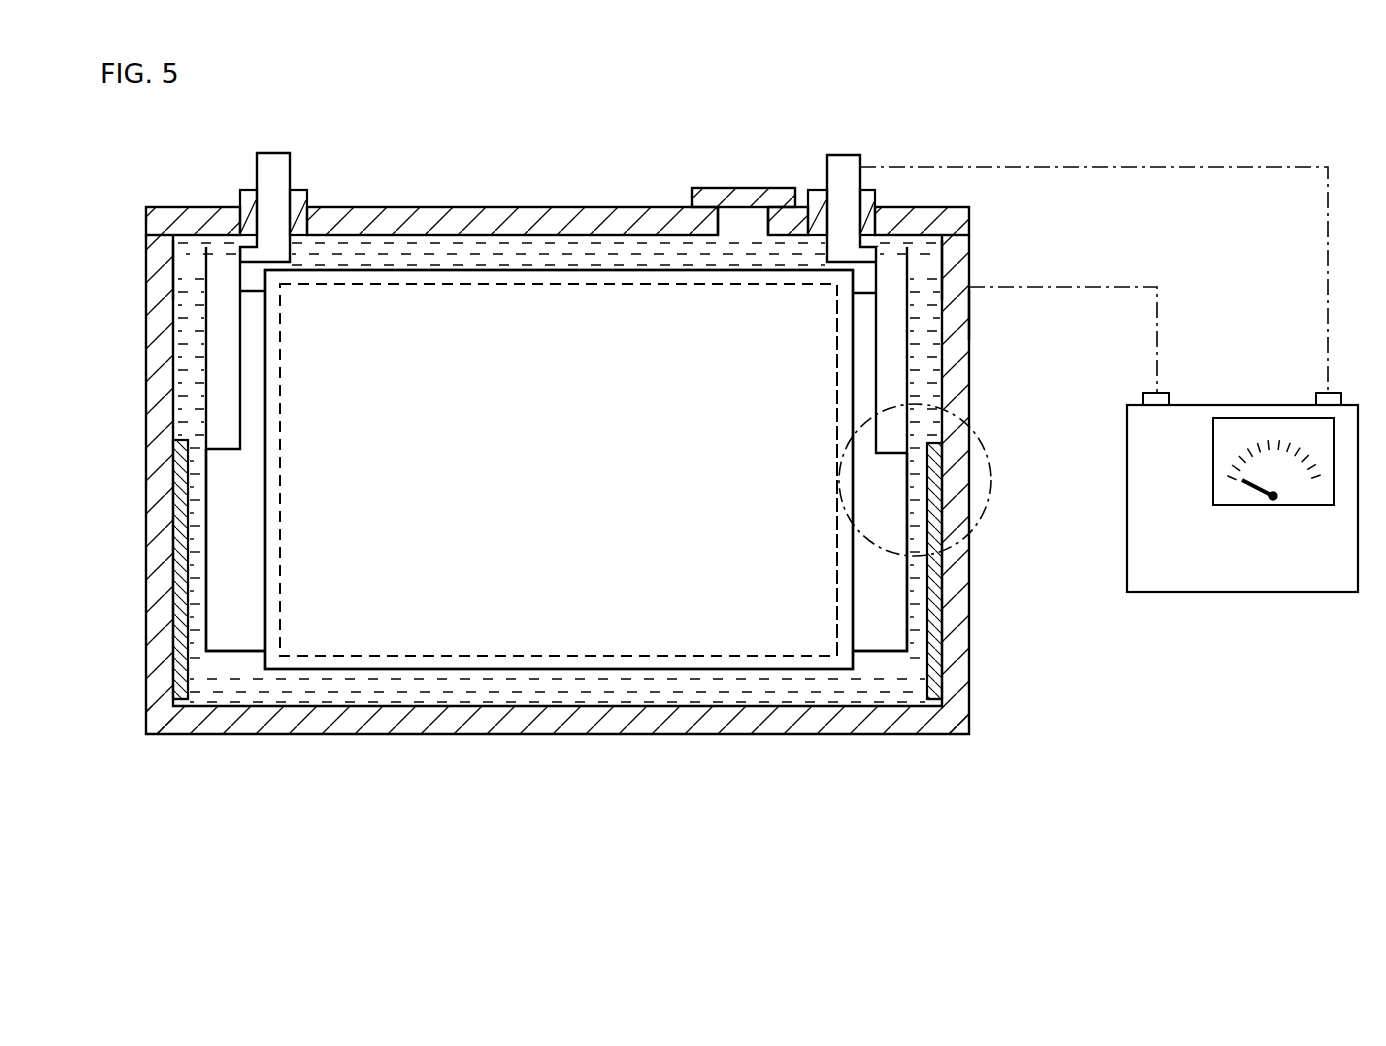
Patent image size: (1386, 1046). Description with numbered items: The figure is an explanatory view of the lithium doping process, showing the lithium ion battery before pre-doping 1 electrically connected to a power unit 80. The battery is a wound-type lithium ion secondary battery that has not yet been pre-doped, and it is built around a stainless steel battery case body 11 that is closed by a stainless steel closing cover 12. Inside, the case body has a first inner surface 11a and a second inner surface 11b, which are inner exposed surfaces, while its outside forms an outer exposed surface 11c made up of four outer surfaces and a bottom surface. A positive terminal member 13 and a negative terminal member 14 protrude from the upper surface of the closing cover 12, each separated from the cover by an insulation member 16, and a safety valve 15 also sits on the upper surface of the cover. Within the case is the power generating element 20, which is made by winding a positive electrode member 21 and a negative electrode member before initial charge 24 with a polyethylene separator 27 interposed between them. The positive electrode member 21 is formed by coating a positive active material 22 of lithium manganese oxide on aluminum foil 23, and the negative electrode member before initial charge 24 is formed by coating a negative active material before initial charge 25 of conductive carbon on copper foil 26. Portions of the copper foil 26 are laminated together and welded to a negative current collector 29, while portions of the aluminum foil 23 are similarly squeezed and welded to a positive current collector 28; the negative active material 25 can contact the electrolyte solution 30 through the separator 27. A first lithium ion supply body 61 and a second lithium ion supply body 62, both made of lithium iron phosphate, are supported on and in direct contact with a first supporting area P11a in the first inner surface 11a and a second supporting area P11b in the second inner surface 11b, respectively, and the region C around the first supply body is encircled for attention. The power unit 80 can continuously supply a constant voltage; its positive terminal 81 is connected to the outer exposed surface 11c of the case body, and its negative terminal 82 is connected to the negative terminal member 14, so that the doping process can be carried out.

The lithium ion battery before pre-doping 1 is at (470, 156).
The battery case body 11 is at (955, 350).
The first inner surface 11a is at (940, 268).
The second inner surface 11b is at (178, 268).
The outer exposed surface 11c is at (969, 313).
The closing cover 12 is at (200, 207).
The positive terminal member 13 is at (275, 160).
The negative terminal member 14 is at (845, 160).
The safety valve 15 is at (712, 192).
The insulation member 16 is at (815, 192).
The power generating element 20 is at (575, 628).
The positive electrode member 21 is at (265, 782).
The positive active material 22 is at (348, 635).
The aluminum foil 23 is at (240, 635).
The negative electrode member before initial charge 24 is at (787, 785).
The negative active material before initial charge 25 is at (802, 643).
The copper foil 26 is at (875, 640).
The separator 27 is at (470, 628).
The positive current collector 28 is at (215, 342).
The negative current collector 29 is at (903, 378).
The electrolyte solution 30 is at (652, 690).
The first lithium ion supply body 61 is at (930, 700).
The second lithium ion supply body 62 is at (183, 685).
The first supporting area P11a is at (935, 645).
The second supporting area P11b is at (180, 525).
The enlarged region C is at (986, 519).
The power unit 80 is at (1245, 577).
The positive terminal 81 is at (1160, 393).
The negative terminal 82 is at (1335, 393).